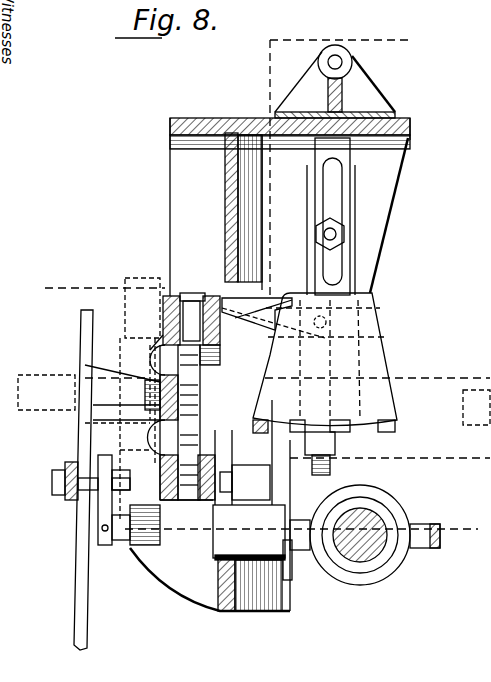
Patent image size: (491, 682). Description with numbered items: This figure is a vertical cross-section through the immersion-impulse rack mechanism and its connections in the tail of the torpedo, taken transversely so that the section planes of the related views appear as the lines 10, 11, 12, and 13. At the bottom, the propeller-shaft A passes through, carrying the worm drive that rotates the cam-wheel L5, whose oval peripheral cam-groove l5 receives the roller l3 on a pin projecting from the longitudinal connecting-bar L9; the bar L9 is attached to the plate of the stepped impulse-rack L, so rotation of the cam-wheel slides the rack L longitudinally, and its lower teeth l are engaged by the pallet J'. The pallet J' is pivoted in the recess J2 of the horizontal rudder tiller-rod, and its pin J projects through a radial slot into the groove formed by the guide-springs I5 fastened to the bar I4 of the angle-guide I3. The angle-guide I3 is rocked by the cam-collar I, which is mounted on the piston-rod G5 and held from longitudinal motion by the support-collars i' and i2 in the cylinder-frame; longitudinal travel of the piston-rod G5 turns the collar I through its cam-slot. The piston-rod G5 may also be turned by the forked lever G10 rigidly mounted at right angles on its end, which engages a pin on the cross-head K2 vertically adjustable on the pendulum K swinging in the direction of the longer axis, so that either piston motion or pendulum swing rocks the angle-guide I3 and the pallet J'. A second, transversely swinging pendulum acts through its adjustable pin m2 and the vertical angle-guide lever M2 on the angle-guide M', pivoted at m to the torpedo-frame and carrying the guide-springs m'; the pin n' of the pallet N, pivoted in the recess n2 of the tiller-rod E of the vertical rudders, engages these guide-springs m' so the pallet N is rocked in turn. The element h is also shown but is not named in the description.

The section line 10 10 is at (403, 6).
The section line 11 11 is at (415, 350).
The section line 12 12 is at (413, 425).
The section line 13 13 is at (450, 500).
The vertical angle-guide lever M2 is at (355, 252).
The adjustable pin m2 is at (345, 226).
The angle-guide M' is at (344, 363).
The pivot m is at (326, 302).
The guide-springs m' is at (271, 320).
The pin of the pallet n' is at (269, 212).
The recess in the tiller-rod n2 is at (222, 355).
The bar I4 is at (312, 432).
The pallet N is at (192, 300).
The tiller-rod E is at (163, 312).
The recess J2 is at (180, 395).
The pin J is at (217, 451).
The angle-guide I3 is at (240, 432).
The guide-springs I5 is at (215, 510).
The cam-collar I is at (288, 560).
The support-collar i' is at (296, 595).
The support-collar i2 is at (308, 500).
The propeller-shaft A is at (366, 553).
The piston-rod G5 is at (432, 548).
The pendulum K is at (81, 318).
The cross-head K2 is at (63, 505).
The forked lever G10 is at (105, 545).
The pin h is at (127, 495).
The pallet J' is at (96, 435).
The lower teeth l is at (162, 435).
The stepped impulse-rack L is at (254, 399).
The cam-wheel L5 is at (142, 332).
The cam-groove l5 is at (101, 364).
The roller l3 is at (126, 406).
The longitudinal connecting-bar L9 is at (141, 349).